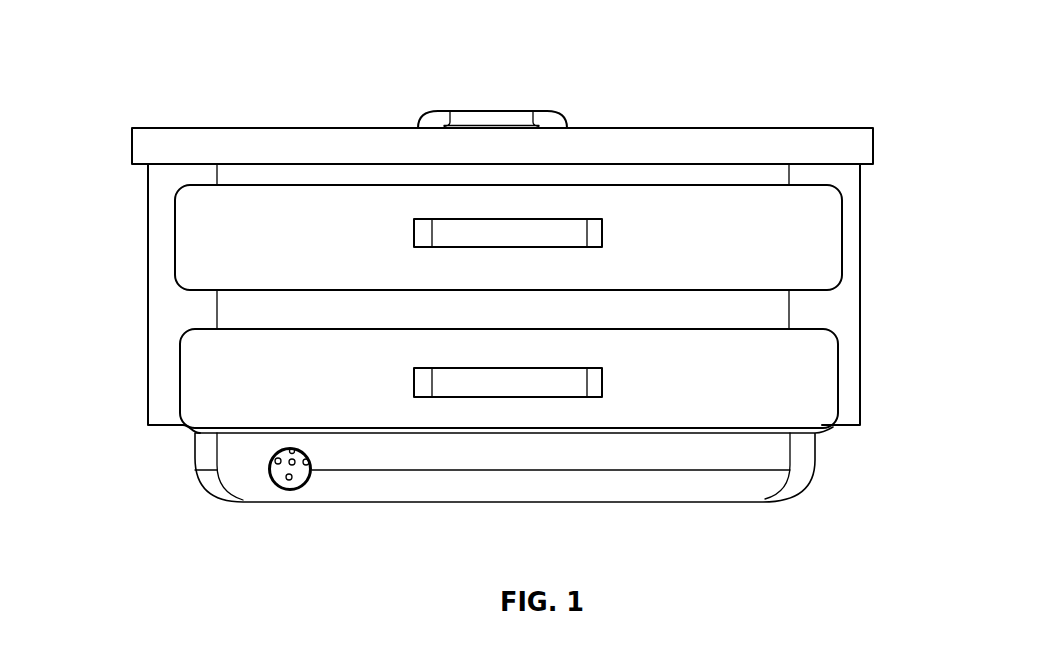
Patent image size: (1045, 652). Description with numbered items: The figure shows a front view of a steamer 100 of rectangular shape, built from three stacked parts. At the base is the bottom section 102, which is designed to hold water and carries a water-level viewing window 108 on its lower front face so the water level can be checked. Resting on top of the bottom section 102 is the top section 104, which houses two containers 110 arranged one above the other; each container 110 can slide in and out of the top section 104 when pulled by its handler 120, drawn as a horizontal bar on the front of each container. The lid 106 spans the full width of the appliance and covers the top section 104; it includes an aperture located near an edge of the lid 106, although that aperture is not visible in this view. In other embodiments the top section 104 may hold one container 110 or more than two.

The steamer 100 is at (118, 60).
The bottom section 102 is at (768, 488).
The top section 104 is at (827, 299).
The lid 106 is at (147, 149).
The water-level viewing window 108 is at (283, 470).
The container 110 is at (803, 235).
The handler 120 is at (566, 233).